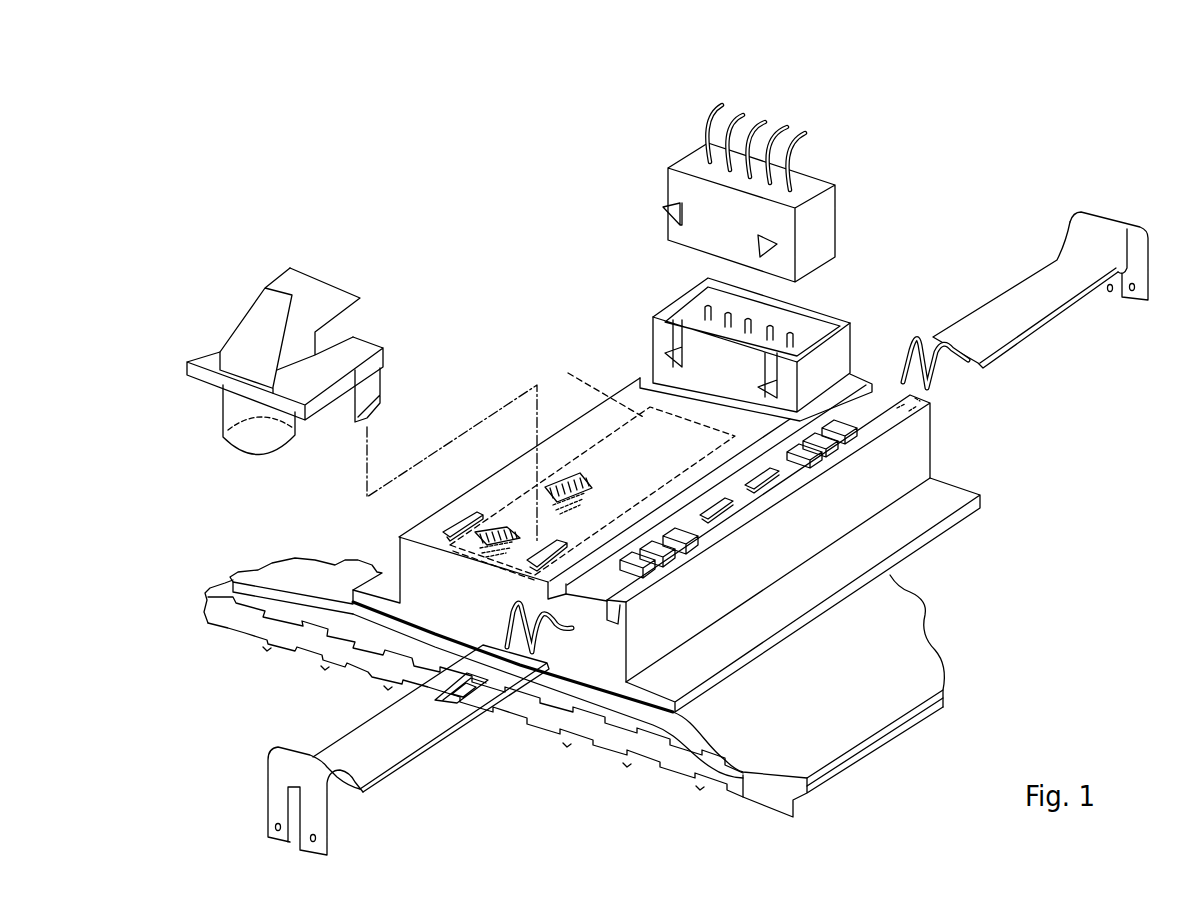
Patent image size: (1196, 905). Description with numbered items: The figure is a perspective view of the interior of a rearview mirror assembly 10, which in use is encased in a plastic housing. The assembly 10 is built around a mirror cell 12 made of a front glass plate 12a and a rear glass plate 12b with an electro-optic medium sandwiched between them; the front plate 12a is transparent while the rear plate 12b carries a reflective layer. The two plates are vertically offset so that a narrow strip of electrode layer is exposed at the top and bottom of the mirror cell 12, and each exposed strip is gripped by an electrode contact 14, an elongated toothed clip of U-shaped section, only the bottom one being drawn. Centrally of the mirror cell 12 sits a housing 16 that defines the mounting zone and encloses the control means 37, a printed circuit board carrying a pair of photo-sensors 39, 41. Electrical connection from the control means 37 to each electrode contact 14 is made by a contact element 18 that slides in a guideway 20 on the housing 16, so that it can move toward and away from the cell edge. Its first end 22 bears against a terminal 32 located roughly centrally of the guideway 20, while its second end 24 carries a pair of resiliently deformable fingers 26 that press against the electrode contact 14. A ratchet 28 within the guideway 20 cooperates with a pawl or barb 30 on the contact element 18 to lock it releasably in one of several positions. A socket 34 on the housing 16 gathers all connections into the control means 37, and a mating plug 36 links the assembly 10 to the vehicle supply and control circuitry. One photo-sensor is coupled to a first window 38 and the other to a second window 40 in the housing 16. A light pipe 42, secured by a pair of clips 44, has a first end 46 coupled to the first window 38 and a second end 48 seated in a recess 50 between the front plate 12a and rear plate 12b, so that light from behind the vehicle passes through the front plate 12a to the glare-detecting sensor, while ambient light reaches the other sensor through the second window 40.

The rearview mirror assembly 10 is at (545, 272).
The mirror cell 12 is at (900, 741).
The front glass plate 12a is at (830, 785).
The rear glass plate 12b is at (770, 767).
The electrode contact 14 is at (318, 647).
The housing 16 is at (625, 393).
The contact element 18 is at (1023, 308).
The guideway 20 is at (788, 466).
The first end 22 is at (908, 337).
The second end 24 is at (1140, 262).
The resiliently deformable fingers 26 is at (1110, 295).
The ratchet 28 is at (658, 553).
The pawl or barb 30 is at (475, 687).
The terminal 32 is at (723, 513).
The socket 34 is at (688, 298).
The plug 36 is at (830, 221).
The control means 37 is at (592, 382).
The first window 38 is at (507, 530).
The photo-sensor 39 is at (452, 522).
The second window 40 is at (577, 482).
The photo-sensor 41 is at (600, 470).
The light pipe 42 is at (253, 318).
The clips 44 is at (380, 408).
The first end 46 is at (340, 300).
The second end 48 is at (257, 437).
The recess 50 is at (347, 627).